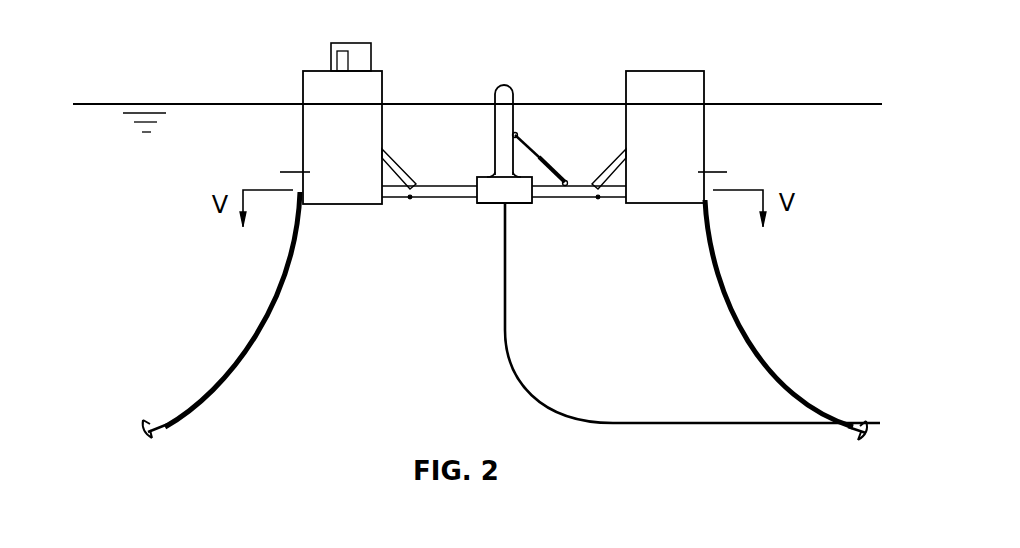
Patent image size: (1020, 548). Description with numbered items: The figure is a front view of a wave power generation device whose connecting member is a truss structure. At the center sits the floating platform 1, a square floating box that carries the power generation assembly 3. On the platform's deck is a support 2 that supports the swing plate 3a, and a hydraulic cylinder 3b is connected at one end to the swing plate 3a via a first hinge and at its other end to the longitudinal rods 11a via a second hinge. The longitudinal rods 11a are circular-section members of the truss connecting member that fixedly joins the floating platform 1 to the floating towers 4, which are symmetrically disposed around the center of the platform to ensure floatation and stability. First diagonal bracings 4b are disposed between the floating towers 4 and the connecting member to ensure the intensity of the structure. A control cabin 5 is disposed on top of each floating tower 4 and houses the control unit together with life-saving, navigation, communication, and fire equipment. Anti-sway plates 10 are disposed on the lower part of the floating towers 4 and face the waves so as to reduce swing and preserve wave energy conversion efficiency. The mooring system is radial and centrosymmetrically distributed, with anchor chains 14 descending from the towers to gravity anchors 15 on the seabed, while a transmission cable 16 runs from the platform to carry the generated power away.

The floating platform 1 is at (490, 210).
The support for supporting swing plate 2 is at (493, 173).
The power generation assembly 3 is at (516, 77).
The swing plate 3a is at (507, 110).
The hydraulic cylinder 3b is at (542, 160).
The floating tower 4 is at (396, 86).
The first diagonal bracing 4b is at (392, 170).
The control cabin 5 is at (319, 48).
The anti-sway plate 10 is at (722, 172).
The longitudinal rod 11a is at (445, 192).
The anchor chain 14 is at (732, 307).
The gravity anchor 15 is at (855, 414).
The transmission cable 16 is at (600, 418).